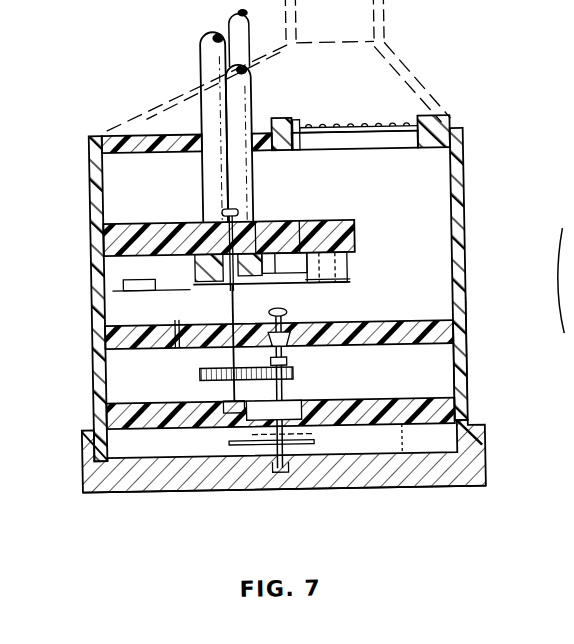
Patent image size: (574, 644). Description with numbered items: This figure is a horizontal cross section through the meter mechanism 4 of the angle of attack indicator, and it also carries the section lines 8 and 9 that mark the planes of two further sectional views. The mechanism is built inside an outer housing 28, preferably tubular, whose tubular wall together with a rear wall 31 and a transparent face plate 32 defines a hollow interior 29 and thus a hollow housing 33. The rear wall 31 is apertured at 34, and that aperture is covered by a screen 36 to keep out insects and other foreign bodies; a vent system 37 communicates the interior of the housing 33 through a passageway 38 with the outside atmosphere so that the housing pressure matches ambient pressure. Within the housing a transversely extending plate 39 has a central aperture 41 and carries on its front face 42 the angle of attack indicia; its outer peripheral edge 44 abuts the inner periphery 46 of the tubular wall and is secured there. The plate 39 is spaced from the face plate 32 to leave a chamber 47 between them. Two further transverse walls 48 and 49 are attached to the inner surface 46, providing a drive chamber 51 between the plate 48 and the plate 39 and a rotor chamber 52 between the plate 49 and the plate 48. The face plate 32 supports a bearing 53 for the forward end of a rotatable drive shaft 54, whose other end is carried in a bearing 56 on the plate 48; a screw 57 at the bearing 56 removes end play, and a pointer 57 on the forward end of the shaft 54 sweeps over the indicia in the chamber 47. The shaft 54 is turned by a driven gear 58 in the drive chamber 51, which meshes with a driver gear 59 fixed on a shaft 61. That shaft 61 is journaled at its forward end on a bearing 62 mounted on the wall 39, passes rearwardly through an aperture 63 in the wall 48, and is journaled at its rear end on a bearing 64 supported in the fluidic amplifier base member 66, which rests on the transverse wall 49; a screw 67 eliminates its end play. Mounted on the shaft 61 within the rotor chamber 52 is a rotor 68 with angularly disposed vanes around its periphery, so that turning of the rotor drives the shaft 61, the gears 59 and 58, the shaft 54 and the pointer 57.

The meter mechanism 4 is at (468, 367).
The section line 8- 8 is at (397, 254).
The section line 9- 9 is at (430, 232).
The outer housing 28 is at (97, 393).
The hollow interior 29 is at (332, 185).
The rear wall 31 is at (150, 138).
The face plate 32 is at (148, 490).
The hollow housing 33 is at (466, 285).
The aperture 34 is at (391, 139).
The screen 36 is at (353, 129).
The vent system 37 is at (409, 60).
The passageway 38 is at (353, 21).
The transversely extending plate 39 is at (392, 406).
The central aperture 41 is at (288, 417).
The front face 42 is at (405, 426).
The outer peripheral edge 44 is at (464, 411).
The inner periphery 46 is at (452, 356).
The chamber 47 is at (368, 471).
The transverse wall 48 is at (400, 332).
The transverse wall 49 is at (157, 228).
The drive chamber 51 is at (139, 392).
The rotor chamber 52 is at (147, 319).
The bearing 53 is at (265, 477).
The drive shaft 54 is at (278, 438).
The bearing 56 is at (293, 338).
The pointer 57 is at (268, 320).
The driven gear 58 is at (294, 380).
The driver gear 59 is at (206, 371).
The shaft 61 is at (233, 311).
The bearing 62 is at (227, 403).
The aperture 63 is at (188, 332).
The bearing 64 is at (251, 239).
The fluidic amplifier base member 66 is at (298, 252).
The screw 67 is at (227, 237).
The rotor 68 is at (366, 269).